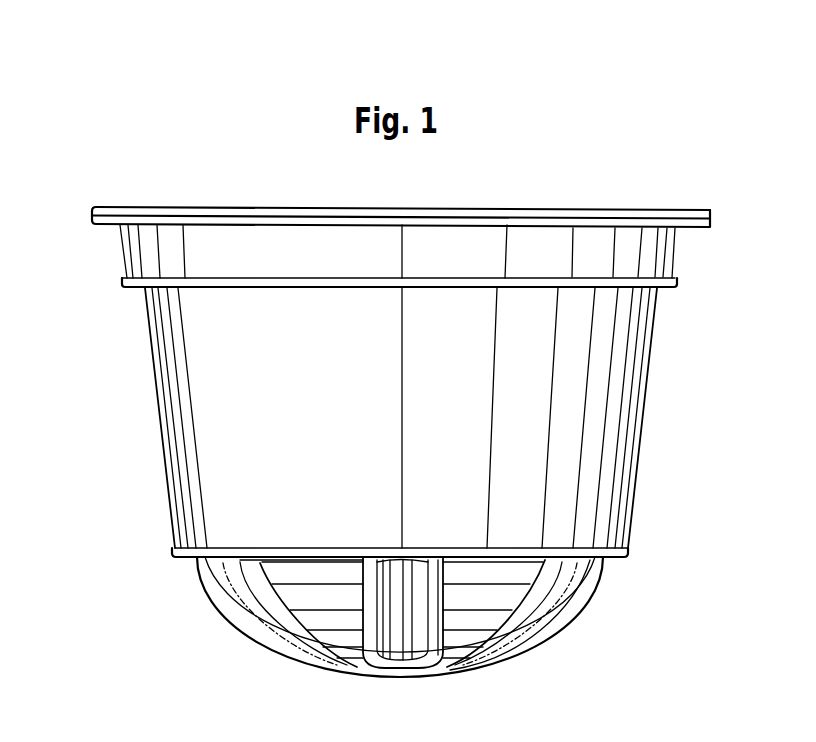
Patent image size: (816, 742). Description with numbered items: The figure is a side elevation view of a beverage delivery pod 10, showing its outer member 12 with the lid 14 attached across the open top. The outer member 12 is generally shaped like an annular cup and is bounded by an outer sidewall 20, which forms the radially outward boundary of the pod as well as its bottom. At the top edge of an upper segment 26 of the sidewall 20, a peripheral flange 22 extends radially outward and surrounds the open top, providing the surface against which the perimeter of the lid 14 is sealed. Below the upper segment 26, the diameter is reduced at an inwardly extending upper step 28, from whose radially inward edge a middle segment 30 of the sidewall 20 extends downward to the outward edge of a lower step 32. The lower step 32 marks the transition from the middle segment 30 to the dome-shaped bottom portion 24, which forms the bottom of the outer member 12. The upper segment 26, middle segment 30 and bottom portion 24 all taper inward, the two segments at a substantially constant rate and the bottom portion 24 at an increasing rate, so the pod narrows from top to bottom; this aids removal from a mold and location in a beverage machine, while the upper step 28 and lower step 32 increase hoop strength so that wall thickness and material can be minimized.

The beverage delivery pod 10 is at (617, 153).
The outer member 12 is at (643, 413).
The lid 14 is at (653, 208).
The outer sidewall 20 is at (648, 375).
The peripheral flange 22 is at (692, 230).
The dome-shaped bottom portion 24 is at (548, 628).
The upper segment 26 is at (122, 247).
The upper step 28 is at (132, 287).
The middle segment 30 is at (156, 400).
The lower step 32 is at (187, 556).